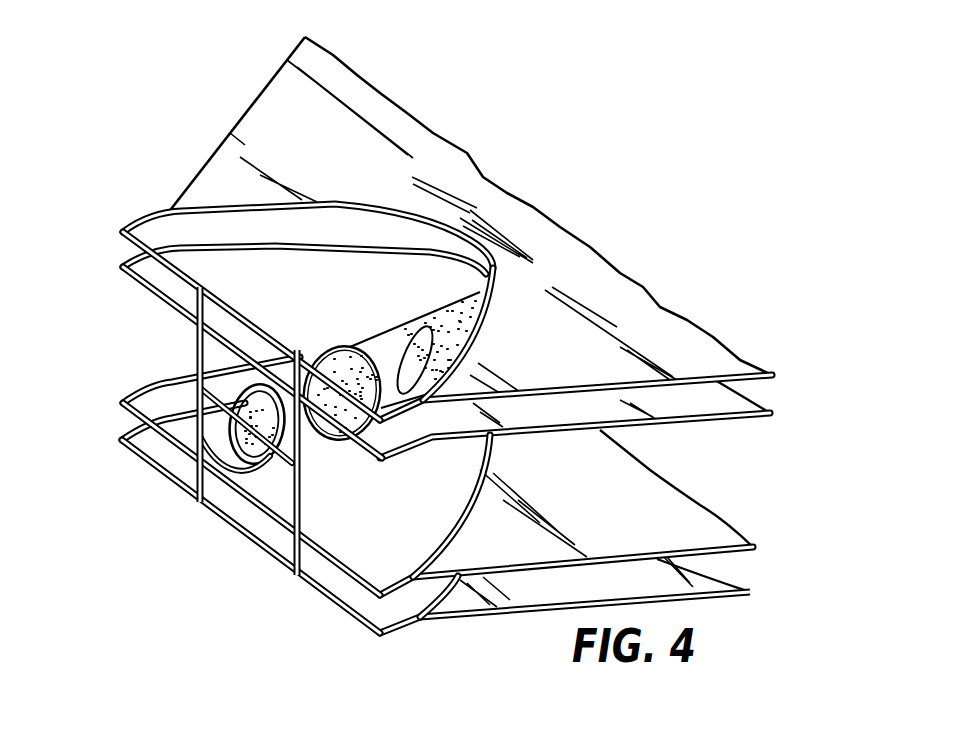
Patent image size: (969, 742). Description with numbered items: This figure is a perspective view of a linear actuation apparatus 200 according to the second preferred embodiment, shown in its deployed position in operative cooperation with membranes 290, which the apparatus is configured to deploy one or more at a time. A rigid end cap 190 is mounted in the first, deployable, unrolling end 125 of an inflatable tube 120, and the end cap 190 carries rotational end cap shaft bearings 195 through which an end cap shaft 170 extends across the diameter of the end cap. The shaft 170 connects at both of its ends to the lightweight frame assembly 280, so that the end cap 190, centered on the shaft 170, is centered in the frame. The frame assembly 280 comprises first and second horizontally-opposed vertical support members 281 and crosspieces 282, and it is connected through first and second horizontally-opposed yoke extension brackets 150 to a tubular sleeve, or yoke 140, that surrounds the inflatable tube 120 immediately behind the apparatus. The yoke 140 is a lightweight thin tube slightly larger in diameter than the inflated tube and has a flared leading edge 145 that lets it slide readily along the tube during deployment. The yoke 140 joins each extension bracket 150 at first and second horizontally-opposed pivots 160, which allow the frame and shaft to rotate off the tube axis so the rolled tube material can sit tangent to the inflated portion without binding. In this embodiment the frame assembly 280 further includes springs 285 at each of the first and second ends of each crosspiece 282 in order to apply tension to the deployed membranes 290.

The linear actuation apparatus 200 is at (130, 320).
The inflatable tube 120 is at (443, 324).
The first, deployable, unrolling end 125 is at (215, 385).
The yoke 140 is at (380, 343).
The flared leading edge 145 is at (337, 341).
The yoke extension brackets 150 is at (352, 450).
The pivots 160 is at (403, 430).
The end cap shaft 170 is at (205, 492).
The rigid end cap 190 is at (236, 437).
The rotational end cap shaft bearings 195 is at (265, 470).
The frame assembly 280 is at (264, 562).
The vertical support members 281 is at (303, 516).
The crosspieces 282 is at (313, 584).
The springs 285 is at (403, 624).
The membranes 290 is at (473, 614).